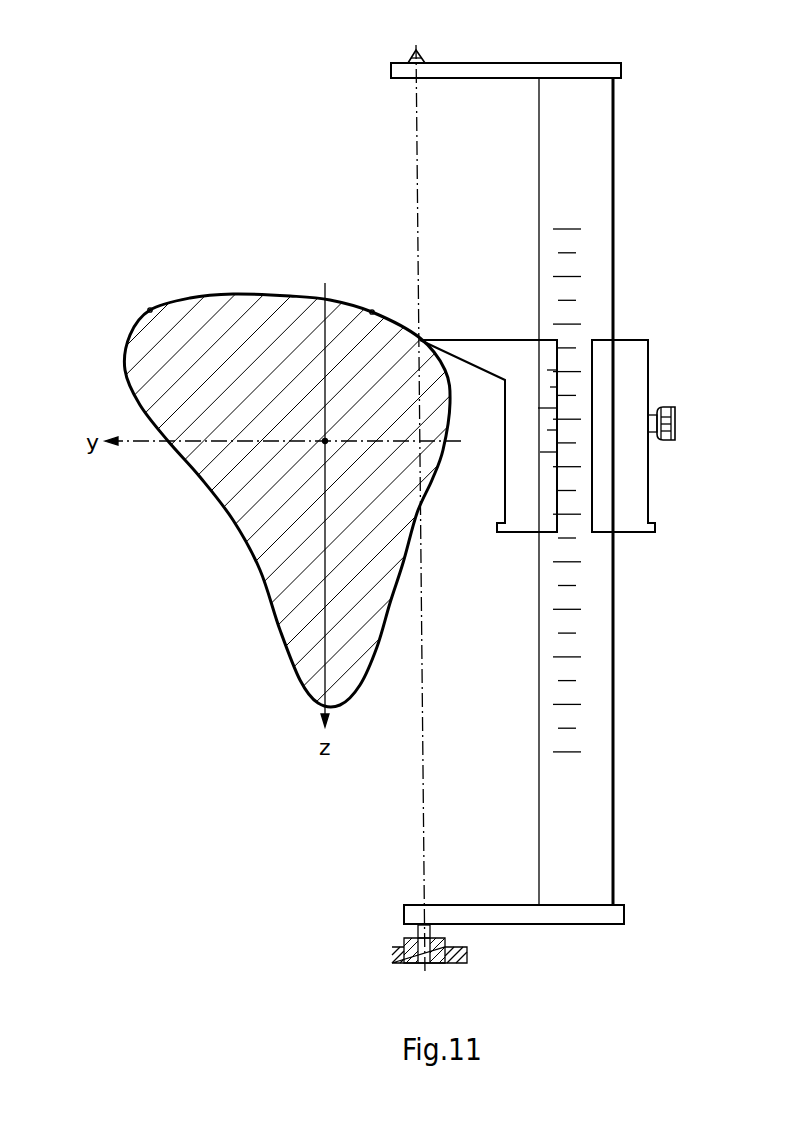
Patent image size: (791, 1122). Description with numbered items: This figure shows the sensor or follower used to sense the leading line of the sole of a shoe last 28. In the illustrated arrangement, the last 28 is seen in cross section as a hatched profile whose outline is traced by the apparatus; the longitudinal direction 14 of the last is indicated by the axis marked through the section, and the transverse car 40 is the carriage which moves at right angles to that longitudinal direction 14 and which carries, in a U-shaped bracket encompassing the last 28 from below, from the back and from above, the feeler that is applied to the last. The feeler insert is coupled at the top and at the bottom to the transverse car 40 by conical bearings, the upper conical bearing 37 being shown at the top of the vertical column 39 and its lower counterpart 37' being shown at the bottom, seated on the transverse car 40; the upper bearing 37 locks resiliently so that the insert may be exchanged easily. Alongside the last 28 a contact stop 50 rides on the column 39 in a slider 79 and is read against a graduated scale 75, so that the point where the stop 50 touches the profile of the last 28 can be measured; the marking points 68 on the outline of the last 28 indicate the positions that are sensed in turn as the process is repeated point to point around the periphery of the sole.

The longitudinal direction 14 is at (330, 437).
The last 28 is at (284, 504).
The conical bearing 37 is at (412, 32).
The lower centering tip 37' is at (391, 941).
The vertical column 39 is at (613, 730).
The transverse car 40 is at (392, 956).
The contact stop 50 is at (422, 339).
The marking points 68 is at (149, 307).
The graduated scale 75 is at (578, 653).
The slider with clamping knob 79 is at (641, 344).